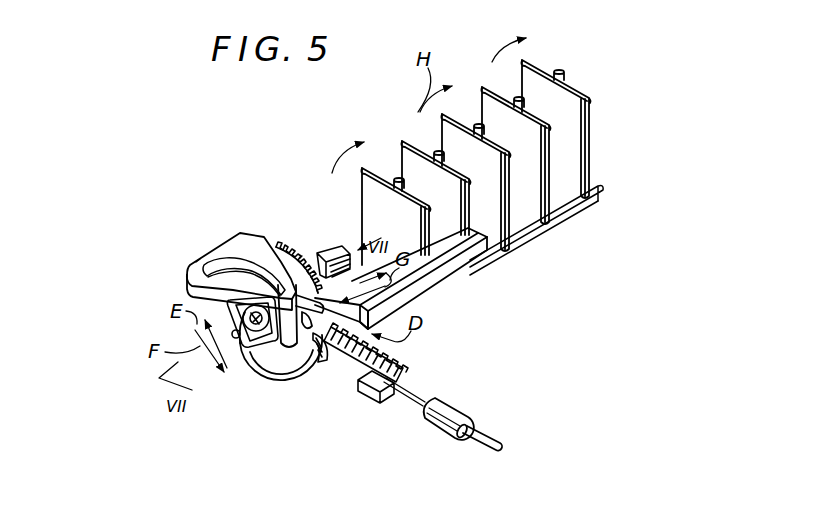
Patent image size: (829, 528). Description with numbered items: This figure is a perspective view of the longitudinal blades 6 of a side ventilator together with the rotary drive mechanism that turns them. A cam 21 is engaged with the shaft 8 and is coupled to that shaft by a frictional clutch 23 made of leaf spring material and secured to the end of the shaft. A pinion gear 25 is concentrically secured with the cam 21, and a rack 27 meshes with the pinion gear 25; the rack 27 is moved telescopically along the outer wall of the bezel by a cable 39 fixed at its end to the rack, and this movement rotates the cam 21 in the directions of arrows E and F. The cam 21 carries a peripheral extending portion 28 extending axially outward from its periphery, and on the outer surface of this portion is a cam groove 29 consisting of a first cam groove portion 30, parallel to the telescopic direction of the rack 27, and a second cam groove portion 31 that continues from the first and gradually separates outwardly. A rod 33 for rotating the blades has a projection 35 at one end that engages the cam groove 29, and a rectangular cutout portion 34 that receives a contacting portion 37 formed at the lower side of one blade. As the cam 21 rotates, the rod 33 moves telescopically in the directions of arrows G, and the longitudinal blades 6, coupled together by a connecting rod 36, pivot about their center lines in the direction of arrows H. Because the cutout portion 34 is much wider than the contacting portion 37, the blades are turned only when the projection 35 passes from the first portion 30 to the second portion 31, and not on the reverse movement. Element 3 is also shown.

The motor 3 is at (458, 410).
The longitudinal blades 6 is at (542, 64).
The shaft 8 is at (318, 256).
The cam 21 is at (272, 370).
The frictional clutch 23 is at (243, 347).
The pinion gear 25 is at (300, 256).
The rack 27 is at (398, 372).
The peripheral extending portion 28 is at (187, 277).
The cam groove 29 is at (222, 259).
The first cam groove portion 30 is at (293, 362).
The second cam groove portion 31 is at (200, 263).
The rod 33 is at (428, 293).
The rectangular cutout portion 34 is at (432, 267).
The projection 35 is at (323, 343).
The connecting rod 36 is at (570, 210).
The contacting portion 37 is at (508, 242).
The cable 39 is at (415, 392).